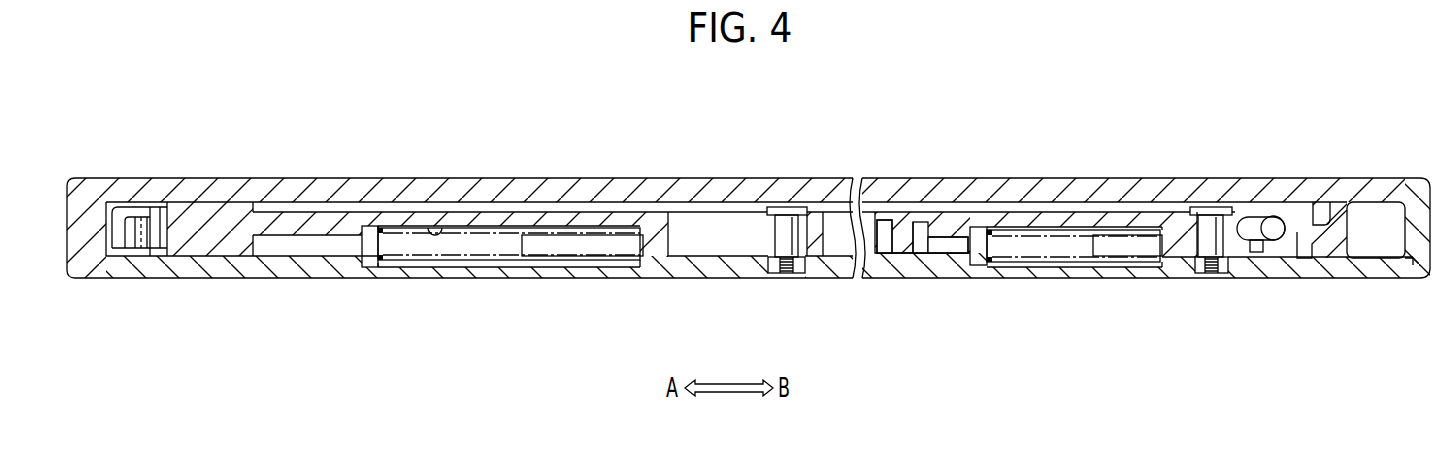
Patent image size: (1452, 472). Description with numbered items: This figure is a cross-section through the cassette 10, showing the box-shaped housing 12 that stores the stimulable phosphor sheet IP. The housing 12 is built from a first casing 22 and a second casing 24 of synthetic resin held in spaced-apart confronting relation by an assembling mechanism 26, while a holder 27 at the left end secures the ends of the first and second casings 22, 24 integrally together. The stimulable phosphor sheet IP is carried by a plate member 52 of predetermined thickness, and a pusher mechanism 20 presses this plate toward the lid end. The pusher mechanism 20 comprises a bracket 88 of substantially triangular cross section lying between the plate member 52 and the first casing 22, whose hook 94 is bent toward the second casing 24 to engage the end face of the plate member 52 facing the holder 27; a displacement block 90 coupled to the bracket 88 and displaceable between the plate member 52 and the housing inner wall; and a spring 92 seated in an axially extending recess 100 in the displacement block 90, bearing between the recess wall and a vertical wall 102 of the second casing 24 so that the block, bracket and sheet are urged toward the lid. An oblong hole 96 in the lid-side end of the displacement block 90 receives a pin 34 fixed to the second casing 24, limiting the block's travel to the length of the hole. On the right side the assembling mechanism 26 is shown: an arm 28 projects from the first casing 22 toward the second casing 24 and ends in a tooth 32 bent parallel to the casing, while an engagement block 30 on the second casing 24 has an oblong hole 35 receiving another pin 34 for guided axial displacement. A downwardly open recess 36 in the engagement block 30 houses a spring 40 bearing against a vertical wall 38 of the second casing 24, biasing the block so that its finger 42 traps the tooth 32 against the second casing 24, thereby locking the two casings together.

The cassette 10 is at (938, 83).
The housing 12 is at (1128, 178).
The stimulable phosphor sheet IP is at (148, 222).
The pusher mechanism 20 is at (307, 243).
The first casing 22 is at (497, 190).
The second casing 24 is at (705, 270).
The assembling mechanism 26 is at (1032, 196).
The holder 27 is at (88, 244).
The arm 28 is at (1340, 213).
The engagement block 30 is at (945, 196).
The tooth 32 is at (1310, 244).
The pin 34 is at (793, 238).
The oblong hole 35 is at (1248, 252).
The recess 36 is at (1020, 240).
The vertical wall 38 is at (958, 248).
The spring 40 is at (1160, 265).
The finger 42 is at (1312, 215).
The plate member 52 is at (147, 250).
The bracket 88 is at (158, 207).
The displacement block 90 is at (237, 247).
The spring 92 is at (378, 262).
The hook 94 is at (115, 232).
The oblong hole 96 is at (690, 214).
The recess 100 is at (435, 228).
The vertical wall 102 is at (362, 258).